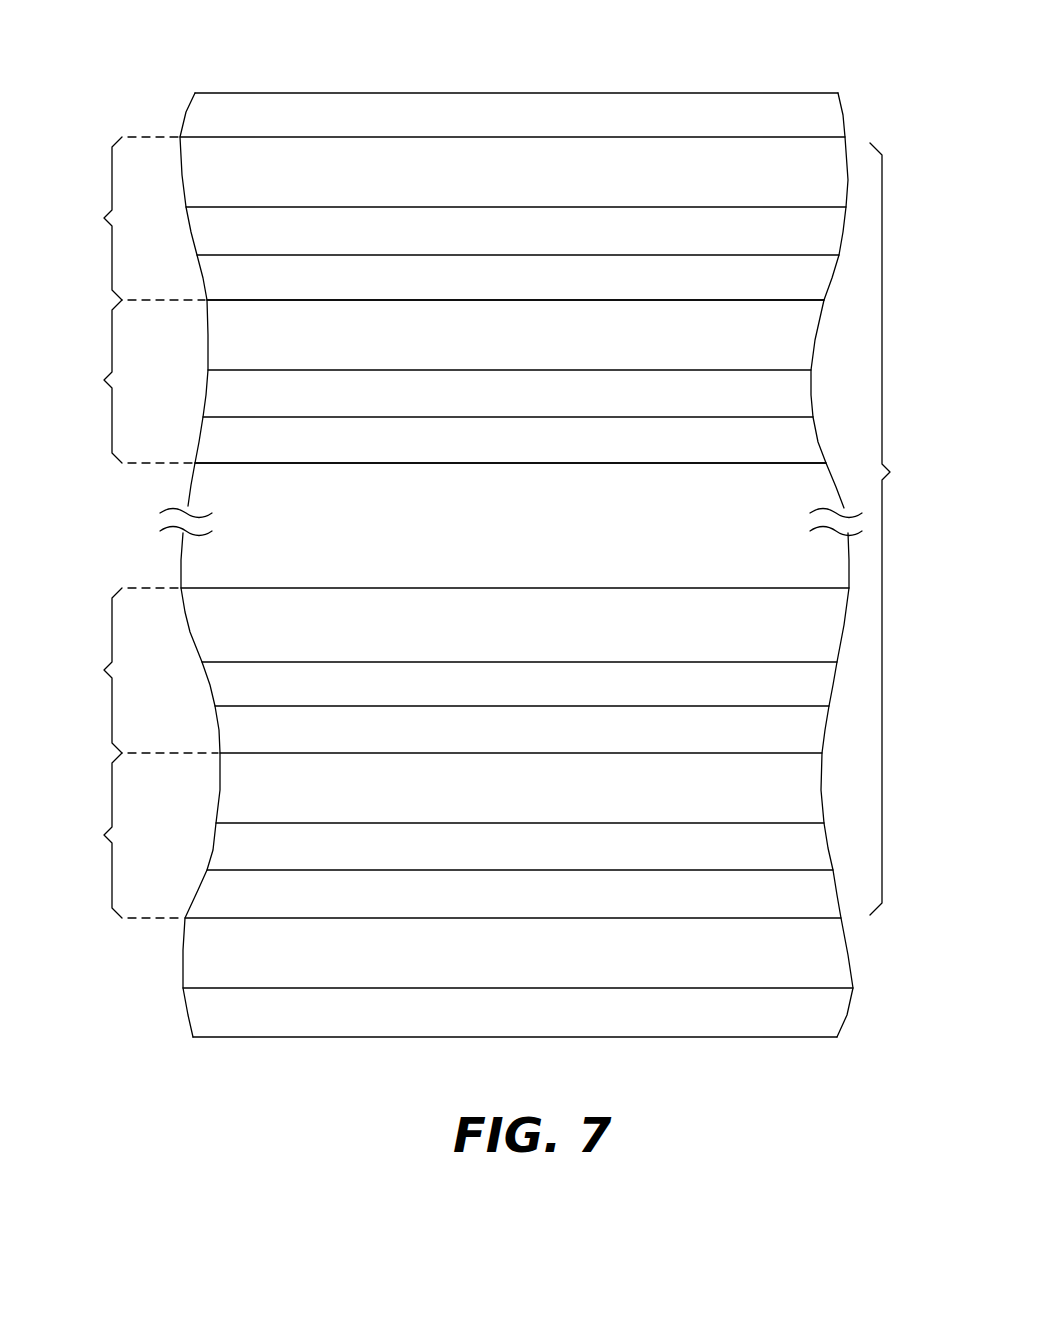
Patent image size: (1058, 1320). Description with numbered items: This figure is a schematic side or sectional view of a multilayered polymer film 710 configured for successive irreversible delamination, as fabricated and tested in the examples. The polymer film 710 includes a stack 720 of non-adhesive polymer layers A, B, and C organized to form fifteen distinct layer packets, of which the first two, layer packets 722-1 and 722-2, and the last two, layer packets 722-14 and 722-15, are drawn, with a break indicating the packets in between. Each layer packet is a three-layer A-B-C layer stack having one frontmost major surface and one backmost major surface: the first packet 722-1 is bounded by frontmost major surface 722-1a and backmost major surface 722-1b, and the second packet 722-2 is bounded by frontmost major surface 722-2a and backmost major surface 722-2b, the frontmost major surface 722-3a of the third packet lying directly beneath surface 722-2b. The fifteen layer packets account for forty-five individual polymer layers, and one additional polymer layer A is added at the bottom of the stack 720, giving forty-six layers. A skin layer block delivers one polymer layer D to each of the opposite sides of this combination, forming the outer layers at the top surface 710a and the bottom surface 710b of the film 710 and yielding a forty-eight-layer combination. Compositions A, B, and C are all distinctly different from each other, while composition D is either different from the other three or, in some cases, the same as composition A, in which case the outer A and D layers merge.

The polymer film 710 is at (479, 544).
The first (top) major surface 710a is at (738, 93).
The second (bottom) major surface 710b is at (675, 1038).
The stack 720 is at (479, 484).
The layer packet 722-1 is at (439, 218).
The layer packet 722-2 is at (422, 381).
The layer packet 722-14 is at (433, 670).
The layer packet 722-15 is at (429, 835).
The frontmost major surface 722-1a is at (586, 137).
The backmost major surface 722-1b is at (700, 300).
The frontmost major surface 722-2a is at (515, 230).
The backmost major surface 722-2b is at (588, 463).
The frontmost major surface 722-3a is at (510, 391).